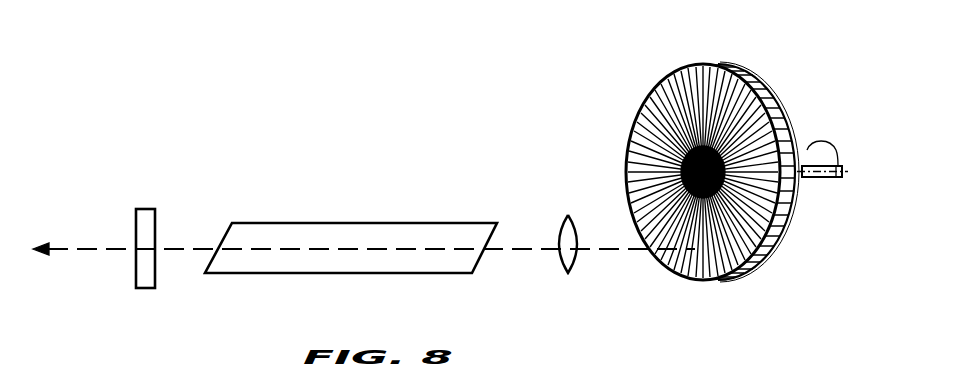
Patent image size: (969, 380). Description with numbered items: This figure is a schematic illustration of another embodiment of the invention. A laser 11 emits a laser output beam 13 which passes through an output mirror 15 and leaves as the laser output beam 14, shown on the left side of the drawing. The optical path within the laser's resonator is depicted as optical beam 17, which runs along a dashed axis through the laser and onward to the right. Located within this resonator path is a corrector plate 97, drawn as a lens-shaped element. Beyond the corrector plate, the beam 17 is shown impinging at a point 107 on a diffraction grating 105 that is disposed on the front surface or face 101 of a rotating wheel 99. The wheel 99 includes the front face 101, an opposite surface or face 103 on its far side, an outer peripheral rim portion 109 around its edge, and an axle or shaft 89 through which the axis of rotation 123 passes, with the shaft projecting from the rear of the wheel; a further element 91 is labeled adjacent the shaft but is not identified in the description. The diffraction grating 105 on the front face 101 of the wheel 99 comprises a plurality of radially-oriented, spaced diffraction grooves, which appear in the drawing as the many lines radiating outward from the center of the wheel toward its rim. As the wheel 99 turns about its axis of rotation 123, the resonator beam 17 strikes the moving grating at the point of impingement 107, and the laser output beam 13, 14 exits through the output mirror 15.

The laser 11 is at (257, 223).
The laser output beam 13 is at (197, 248).
The laser output beam 14 is at (72, 248).
The output mirror 15 is at (137, 242).
The optical beam 17 is at (517, 257).
The axle or shaft 89 is at (838, 178).
The hub 91 is at (810, 185).
The corrector plate 97 is at (578, 262).
The rotating wheel 99 is at (710, 154).
The front surface or face 101 is at (653, 112).
The opposite surface or face 103 is at (788, 108).
The diffraction grating 105 is at (718, 247).
The point of impingement 107 is at (685, 278).
The outer peripheral rim portion 109 is at (763, 257).
The axis of rotation 123 is at (843, 166).